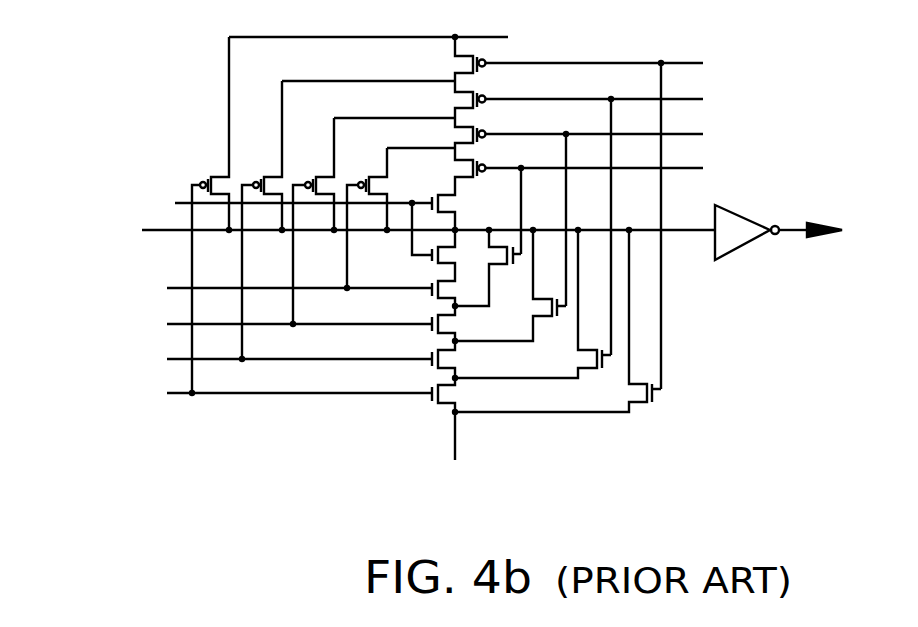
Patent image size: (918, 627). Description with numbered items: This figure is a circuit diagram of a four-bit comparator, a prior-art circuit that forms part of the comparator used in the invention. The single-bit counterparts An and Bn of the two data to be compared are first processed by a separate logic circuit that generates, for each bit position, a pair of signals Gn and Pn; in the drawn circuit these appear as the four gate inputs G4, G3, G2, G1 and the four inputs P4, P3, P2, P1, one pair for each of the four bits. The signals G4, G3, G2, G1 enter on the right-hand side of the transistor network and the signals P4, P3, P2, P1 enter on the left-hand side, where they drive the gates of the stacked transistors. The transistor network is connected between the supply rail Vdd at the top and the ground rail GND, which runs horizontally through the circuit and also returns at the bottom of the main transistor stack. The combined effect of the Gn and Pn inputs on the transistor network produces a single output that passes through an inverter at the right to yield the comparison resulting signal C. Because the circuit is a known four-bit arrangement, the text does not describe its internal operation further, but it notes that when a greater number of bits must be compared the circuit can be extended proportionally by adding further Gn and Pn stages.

The supply voltage rail Vdd is at (397, 38).
The ground rail GND is at (381, 361).
The signal G4 is at (616, 217).
The signal G3 is at (616, 218).
The signal G2 is at (616, 211).
The signal G1 is at (616, 202).
The signal P4 is at (278, 288).
The signal P3 is at (278, 324).
The signal P2 is at (278, 359).
The signal P1 is at (278, 393).
The comparison resulting signal C is at (778, 225).